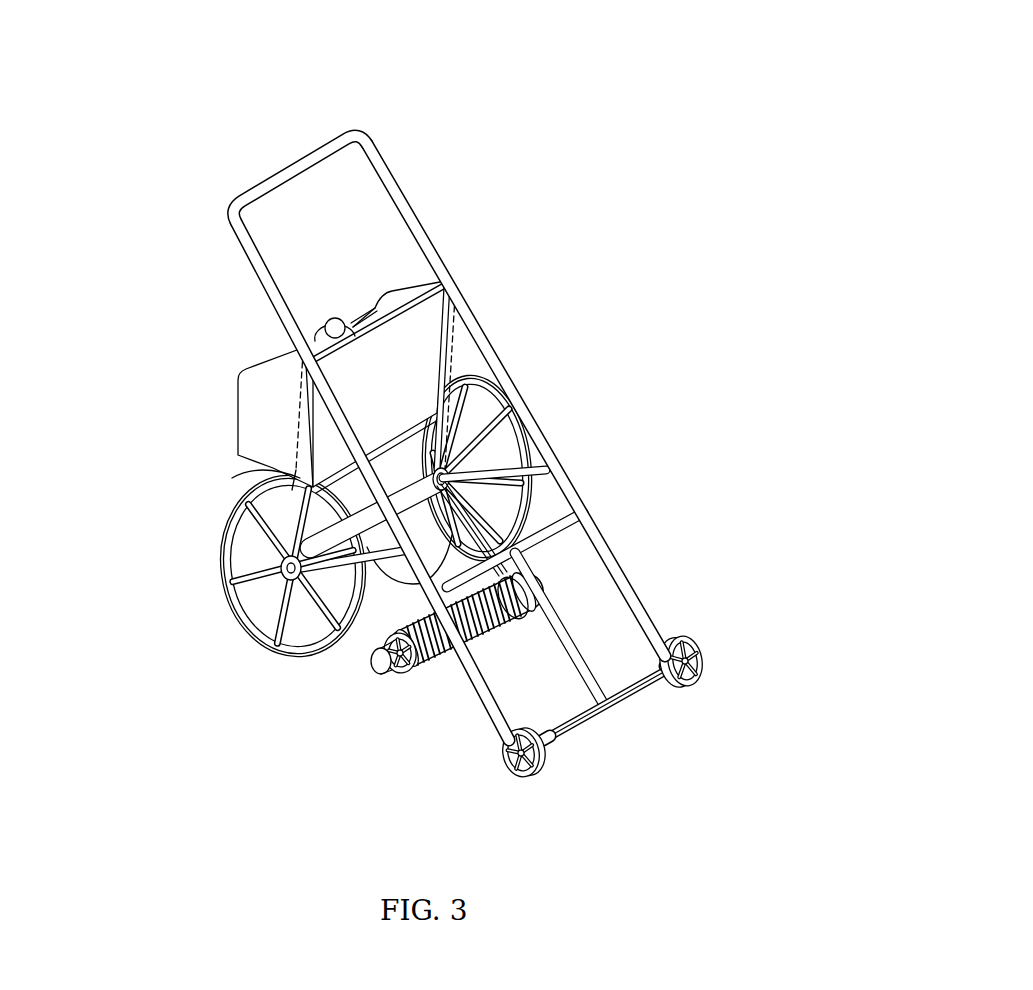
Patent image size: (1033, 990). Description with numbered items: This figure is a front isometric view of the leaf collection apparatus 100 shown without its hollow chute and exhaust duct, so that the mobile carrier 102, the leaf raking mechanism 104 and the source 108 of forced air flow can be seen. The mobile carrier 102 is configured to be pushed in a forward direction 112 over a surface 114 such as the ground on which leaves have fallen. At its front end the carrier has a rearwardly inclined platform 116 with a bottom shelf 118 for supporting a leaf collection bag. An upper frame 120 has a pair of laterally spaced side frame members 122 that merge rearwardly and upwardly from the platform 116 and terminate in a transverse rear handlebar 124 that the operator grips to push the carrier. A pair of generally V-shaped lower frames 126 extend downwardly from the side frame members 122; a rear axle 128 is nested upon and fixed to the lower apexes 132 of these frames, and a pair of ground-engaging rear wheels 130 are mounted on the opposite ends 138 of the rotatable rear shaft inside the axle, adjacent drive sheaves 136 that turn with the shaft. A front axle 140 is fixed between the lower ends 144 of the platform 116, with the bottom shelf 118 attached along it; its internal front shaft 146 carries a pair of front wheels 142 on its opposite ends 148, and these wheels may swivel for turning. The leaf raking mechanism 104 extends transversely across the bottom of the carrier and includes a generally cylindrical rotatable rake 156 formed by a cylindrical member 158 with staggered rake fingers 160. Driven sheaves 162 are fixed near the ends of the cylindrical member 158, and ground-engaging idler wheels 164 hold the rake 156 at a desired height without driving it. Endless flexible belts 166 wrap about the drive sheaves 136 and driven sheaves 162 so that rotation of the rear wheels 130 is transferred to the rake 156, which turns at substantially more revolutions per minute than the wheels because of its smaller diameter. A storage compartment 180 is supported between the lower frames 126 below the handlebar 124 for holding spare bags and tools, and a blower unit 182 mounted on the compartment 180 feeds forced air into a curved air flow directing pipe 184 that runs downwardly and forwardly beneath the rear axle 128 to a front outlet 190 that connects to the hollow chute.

The apparatus 100 is at (599, 92).
The mobile carrier 102 is at (510, 312).
The leaf raking mechanism 104 is at (530, 627).
The source of forced air flow 108 is at (324, 305).
The forward direction 112 is at (658, 484).
The surface 114 is at (575, 666).
The rearwardly inclined platform 116 is at (641, 584).
The bottom shelf 118 is at (640, 694).
The upper frame 120 is at (410, 420).
The side frame members 122 is at (475, 302).
The rear handlebar 124 is at (297, 155).
The lower frames 126 is at (452, 362).
The rear axle 128 is at (358, 500).
The rear wheels 130 is at (261, 566).
The lower apexes 132 is at (432, 474).
The sheaves 136 is at (462, 455).
The opposite ends 138 is at (287, 573).
The front axle 140 is at (575, 716).
The front wheels 142 is at (575, 716).
The lower ends 144 is at (666, 658).
The front shaft 146 is at (550, 721).
The opposite ends 148 is at (546, 753).
The rotatable rake 156 is at (449, 648).
The cylindrical member 158 is at (424, 662).
The rake fingers 160 is at (493, 645).
The sheaves 162 is at (441, 514).
The idler wheels 164 is at (407, 680).
The endless flexible belts 166 is at (549, 478).
The storage compartment 180 is at (237, 394).
The blower unit 182 is at (338, 322).
The air flow directing pipe 184 is at (300, 478).
The front outlet 190 is at (375, 668).